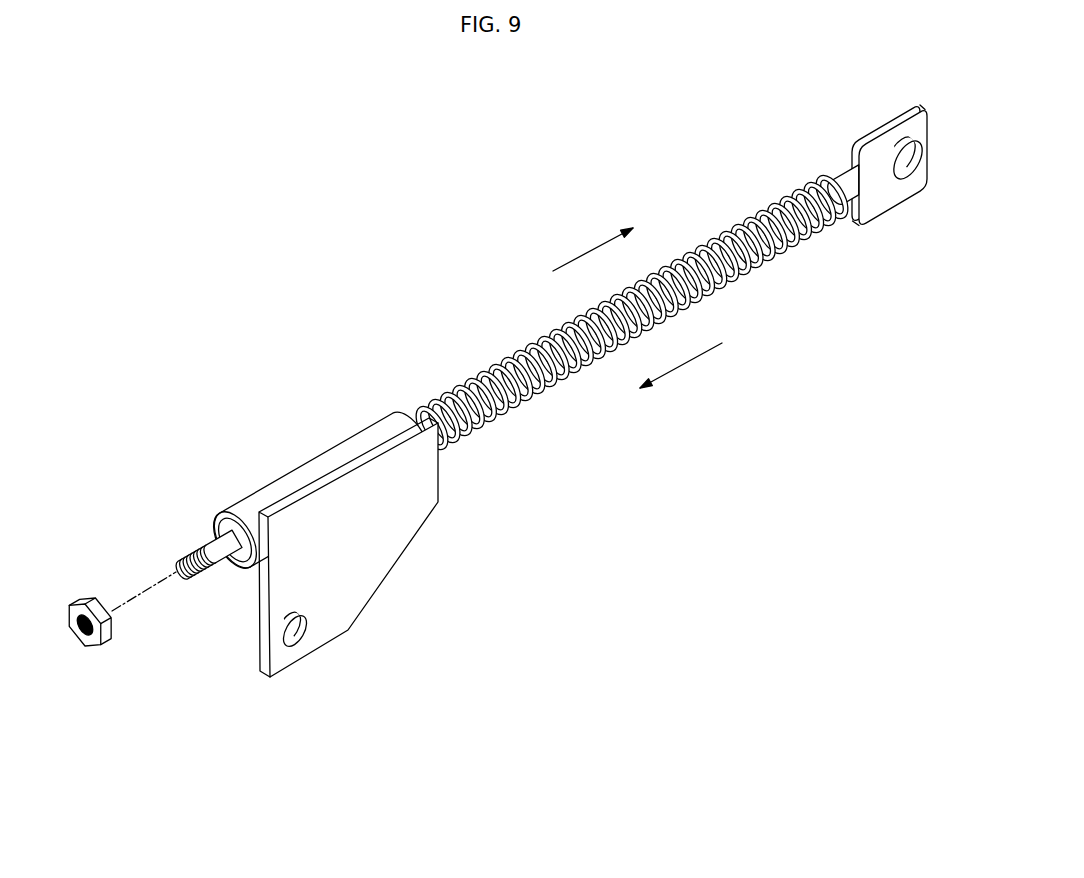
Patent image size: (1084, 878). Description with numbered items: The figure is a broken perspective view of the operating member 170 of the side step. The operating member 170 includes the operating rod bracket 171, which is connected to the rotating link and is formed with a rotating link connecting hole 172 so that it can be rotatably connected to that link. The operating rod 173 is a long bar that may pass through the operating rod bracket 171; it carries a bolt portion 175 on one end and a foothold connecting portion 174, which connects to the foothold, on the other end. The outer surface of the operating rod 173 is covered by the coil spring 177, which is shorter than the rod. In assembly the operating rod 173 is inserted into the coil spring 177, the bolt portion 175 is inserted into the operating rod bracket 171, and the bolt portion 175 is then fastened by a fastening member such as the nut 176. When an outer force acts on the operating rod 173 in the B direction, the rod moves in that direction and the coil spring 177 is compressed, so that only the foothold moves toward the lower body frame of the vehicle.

The operating member 170 is at (428, 158).
The operating rod bracket 171 is at (328, 497).
The rotating link connecting hole 172 is at (303, 630).
The operating rod 173 is at (533, 387).
The foothold connecting portion 174 is at (893, 138).
The bolt portion 175 is at (178, 557).
The nut 176 is at (108, 638).
The coil spring 177 is at (646, 320).